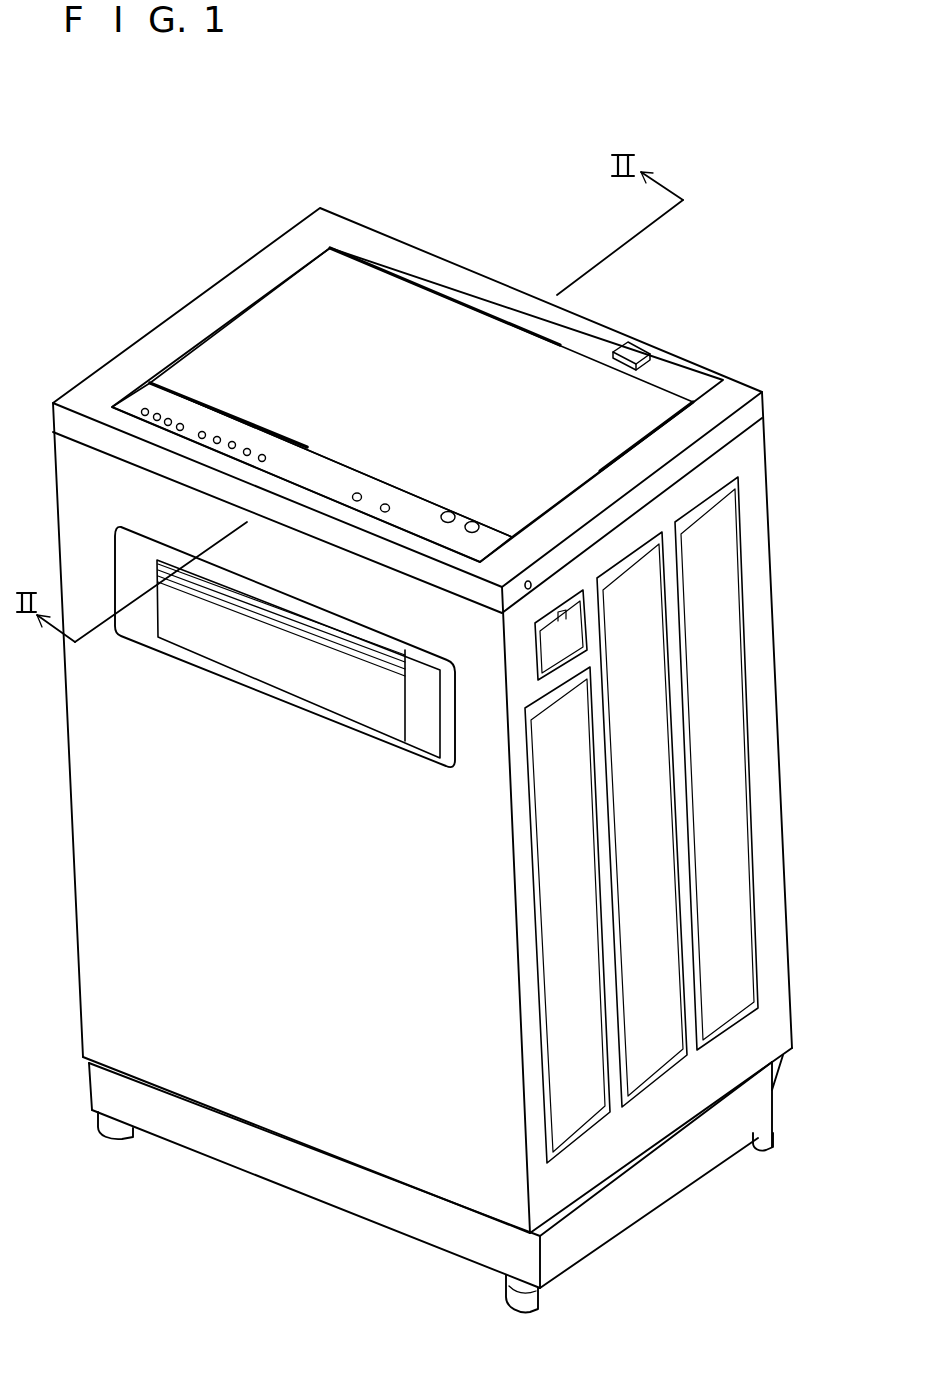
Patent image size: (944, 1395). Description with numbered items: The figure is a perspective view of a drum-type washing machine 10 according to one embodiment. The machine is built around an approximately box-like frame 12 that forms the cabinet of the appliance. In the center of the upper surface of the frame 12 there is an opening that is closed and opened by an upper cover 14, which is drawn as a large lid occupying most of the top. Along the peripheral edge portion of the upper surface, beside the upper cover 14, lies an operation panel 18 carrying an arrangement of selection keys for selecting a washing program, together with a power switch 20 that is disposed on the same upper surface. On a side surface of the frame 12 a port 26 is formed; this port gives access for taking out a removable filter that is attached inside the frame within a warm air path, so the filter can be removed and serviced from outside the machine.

The drum-type washing machine 10 is at (270, 162).
The frame 12 is at (81, 816).
The upper cover 14 is at (437, 315).
The operation panel 18 is at (347, 473).
The power switch 20 is at (632, 353).
The port 26 is at (310, 688).